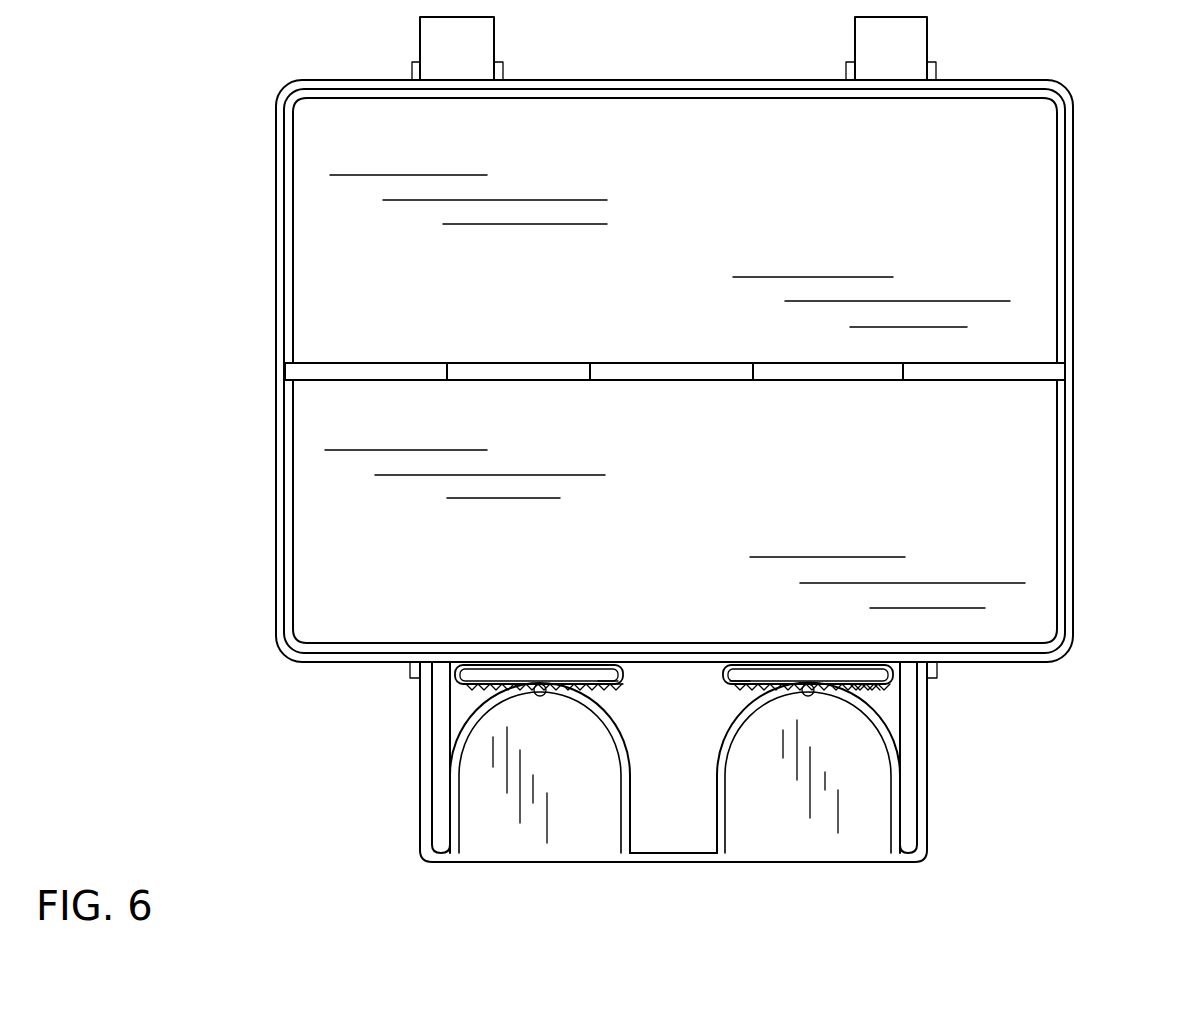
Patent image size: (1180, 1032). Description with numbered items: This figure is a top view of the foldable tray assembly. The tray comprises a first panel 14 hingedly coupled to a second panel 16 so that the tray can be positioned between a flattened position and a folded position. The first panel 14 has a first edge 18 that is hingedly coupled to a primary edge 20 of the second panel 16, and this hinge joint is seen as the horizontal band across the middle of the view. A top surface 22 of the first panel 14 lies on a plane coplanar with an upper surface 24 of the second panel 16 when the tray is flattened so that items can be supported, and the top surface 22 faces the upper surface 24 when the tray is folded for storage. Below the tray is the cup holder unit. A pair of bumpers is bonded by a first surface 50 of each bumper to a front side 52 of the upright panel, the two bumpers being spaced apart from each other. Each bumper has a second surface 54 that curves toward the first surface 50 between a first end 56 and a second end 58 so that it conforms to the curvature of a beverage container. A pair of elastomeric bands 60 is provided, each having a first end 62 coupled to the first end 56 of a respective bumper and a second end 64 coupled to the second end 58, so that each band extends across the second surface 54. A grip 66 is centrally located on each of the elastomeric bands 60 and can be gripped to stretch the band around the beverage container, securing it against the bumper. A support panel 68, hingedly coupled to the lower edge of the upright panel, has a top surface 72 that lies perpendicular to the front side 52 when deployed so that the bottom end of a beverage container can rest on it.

The first panel 14 is at (695, 127).
The second panel 16 is at (338, 471).
The first edge 18 is at (332, 363).
The primary edge 20 is at (355, 378).
The top surface 22 is at (592, 164).
The upper surface 24 is at (993, 538).
The first surface 50 is at (870, 668).
The front side 52 is at (700, 663).
The second surface 54 is at (861, 672).
The first end 56 is at (457, 673).
The second end 58 is at (625, 673).
The elastomeric bands 60 is at (602, 683).
The first end 62 is at (462, 672).
The second end 64 is at (570, 664).
The grip 66 is at (540, 696).
The support panel 68 is at (418, 842).
The top surface 72 is at (474, 788).